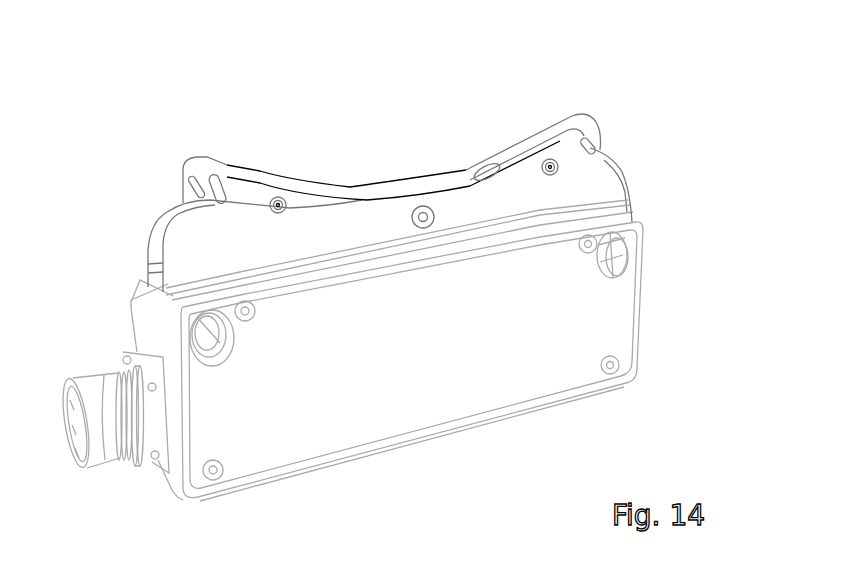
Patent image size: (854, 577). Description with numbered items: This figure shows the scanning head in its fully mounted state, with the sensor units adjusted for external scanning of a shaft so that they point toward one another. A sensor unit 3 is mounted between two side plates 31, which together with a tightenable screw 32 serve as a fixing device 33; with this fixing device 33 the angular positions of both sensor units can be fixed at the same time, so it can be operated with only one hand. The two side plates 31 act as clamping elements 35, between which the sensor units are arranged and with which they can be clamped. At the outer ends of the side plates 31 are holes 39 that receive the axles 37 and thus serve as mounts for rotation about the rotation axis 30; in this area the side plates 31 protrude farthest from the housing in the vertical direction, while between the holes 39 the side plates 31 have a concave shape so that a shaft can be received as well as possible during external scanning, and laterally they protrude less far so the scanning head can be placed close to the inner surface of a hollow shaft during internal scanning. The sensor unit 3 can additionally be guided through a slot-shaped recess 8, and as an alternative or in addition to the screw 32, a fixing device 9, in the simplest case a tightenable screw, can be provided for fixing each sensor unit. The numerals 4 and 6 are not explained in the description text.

The sensor unit 3 is at (197, 198).
The rail 4 is at (260, 159).
The ridge 6 is at (523, 140).
The slot-shaped recess 8 is at (217, 185).
The fixing device 9 is at (210, 218).
The rotation axis 30 is at (285, 208).
The side plate 31 is at (203, 270).
The screw 32 is at (424, 213).
The fixing device 33 is at (398, 110).
The clamping element 35 is at (286, 255).
The axle 37 is at (278, 203).
The hole 39 is at (283, 203).